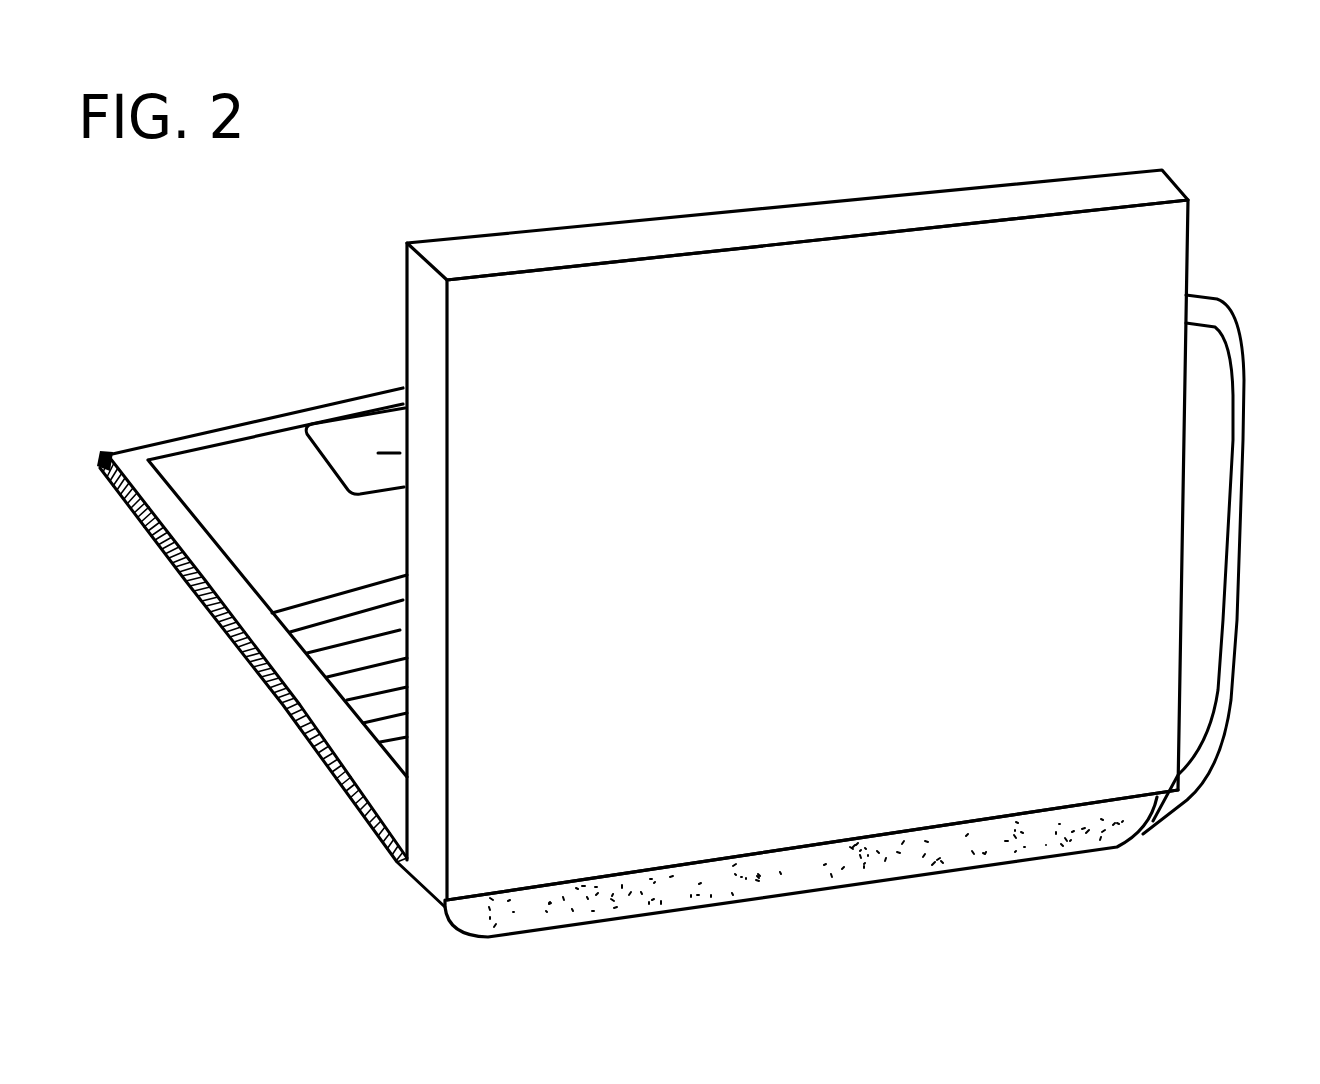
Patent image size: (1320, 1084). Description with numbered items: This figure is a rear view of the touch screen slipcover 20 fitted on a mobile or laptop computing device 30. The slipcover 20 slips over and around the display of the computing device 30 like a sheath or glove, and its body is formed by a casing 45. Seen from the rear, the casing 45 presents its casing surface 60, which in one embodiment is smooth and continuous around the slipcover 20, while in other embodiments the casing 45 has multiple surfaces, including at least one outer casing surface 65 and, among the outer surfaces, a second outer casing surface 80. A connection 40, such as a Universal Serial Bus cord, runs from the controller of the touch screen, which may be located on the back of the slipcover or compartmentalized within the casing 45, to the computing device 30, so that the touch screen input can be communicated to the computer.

The touch screen slipcover 20 is at (418, 203).
The computing device 30 is at (237, 585).
The connection 40 is at (1242, 398).
The casing 45 is at (418, 808).
The casing surface 60 is at (537, 240).
The outer casing surface 65 is at (833, 273).
The second outer casing surface 80 is at (998, 267).